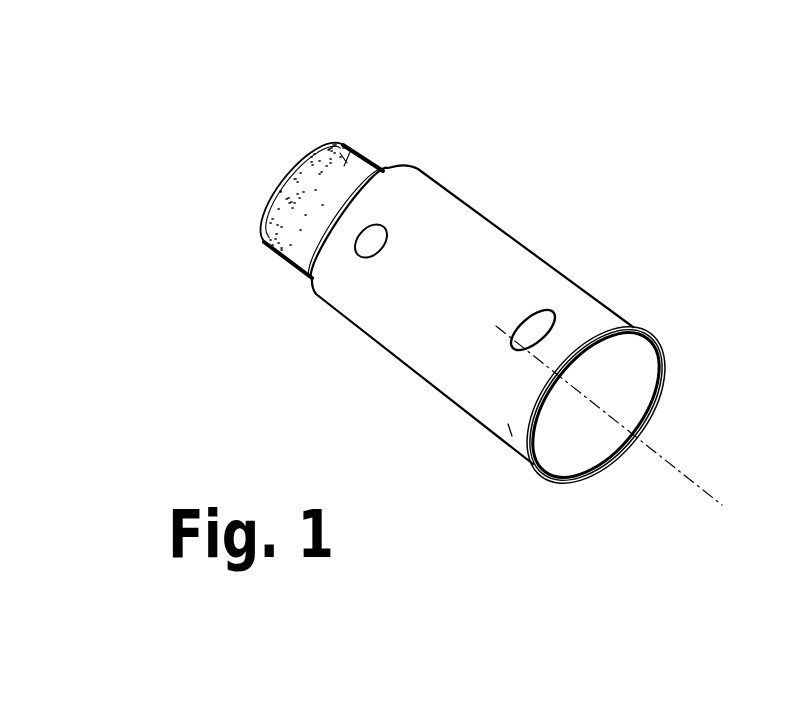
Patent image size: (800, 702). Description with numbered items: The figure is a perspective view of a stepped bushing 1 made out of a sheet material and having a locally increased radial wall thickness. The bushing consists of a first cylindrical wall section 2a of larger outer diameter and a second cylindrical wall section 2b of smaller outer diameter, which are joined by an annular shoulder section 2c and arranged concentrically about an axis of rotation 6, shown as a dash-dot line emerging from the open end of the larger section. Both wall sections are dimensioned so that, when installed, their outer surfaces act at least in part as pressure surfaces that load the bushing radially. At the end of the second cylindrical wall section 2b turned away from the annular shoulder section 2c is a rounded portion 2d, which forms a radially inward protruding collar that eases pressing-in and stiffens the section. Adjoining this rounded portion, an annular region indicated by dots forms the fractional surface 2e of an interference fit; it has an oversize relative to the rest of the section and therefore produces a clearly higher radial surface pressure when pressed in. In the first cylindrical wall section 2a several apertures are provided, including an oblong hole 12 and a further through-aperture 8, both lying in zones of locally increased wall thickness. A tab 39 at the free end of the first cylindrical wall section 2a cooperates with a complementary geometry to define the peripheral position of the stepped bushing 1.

The stepped bushing 1 is at (595, 239).
The first cylindrical wall section 2a is at (587, 317).
The second cylindrical wall section 2b is at (345, 147).
The annular shoulder section 2c is at (297, 294).
The rounded portion 2d is at (275, 195).
The fractional surface of the interference fit 2e is at (314, 157).
The axis of rotation 6 is at (683, 477).
The through-aperture 8 is at (370, 247).
The oblong hole 12 is at (537, 330).
The tab 39 is at (625, 462).